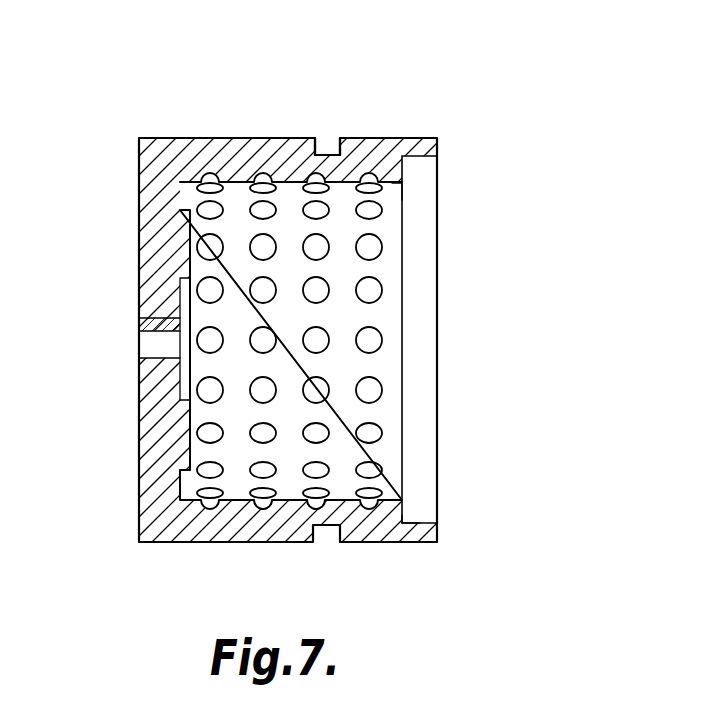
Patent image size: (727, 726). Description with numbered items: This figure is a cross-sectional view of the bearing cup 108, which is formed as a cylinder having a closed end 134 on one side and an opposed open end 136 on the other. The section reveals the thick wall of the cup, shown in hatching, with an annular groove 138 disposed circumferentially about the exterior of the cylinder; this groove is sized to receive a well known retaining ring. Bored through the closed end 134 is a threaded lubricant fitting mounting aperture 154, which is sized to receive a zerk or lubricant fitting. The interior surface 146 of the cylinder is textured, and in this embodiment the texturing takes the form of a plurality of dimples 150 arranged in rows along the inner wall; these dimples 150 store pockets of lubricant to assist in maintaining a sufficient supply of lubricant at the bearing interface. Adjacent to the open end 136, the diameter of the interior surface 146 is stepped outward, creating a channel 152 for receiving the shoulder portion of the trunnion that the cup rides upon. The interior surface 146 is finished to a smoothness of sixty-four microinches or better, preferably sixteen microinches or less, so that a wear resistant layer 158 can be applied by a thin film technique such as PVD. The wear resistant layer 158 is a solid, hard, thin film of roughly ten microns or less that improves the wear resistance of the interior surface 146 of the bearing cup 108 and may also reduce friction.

The bearing cup 108 is at (363, 319).
The closed end 134 is at (142, 488).
The open end 136 is at (445, 353).
The annular groove 138 is at (332, 151).
The interior surface 146 is at (392, 186).
The dimples 150 is at (382, 285).
The channel 152 is at (427, 522).
The lubricant fitting mounting aperture 154 is at (156, 358).
The wear resistant layer 158 is at (294, 504).